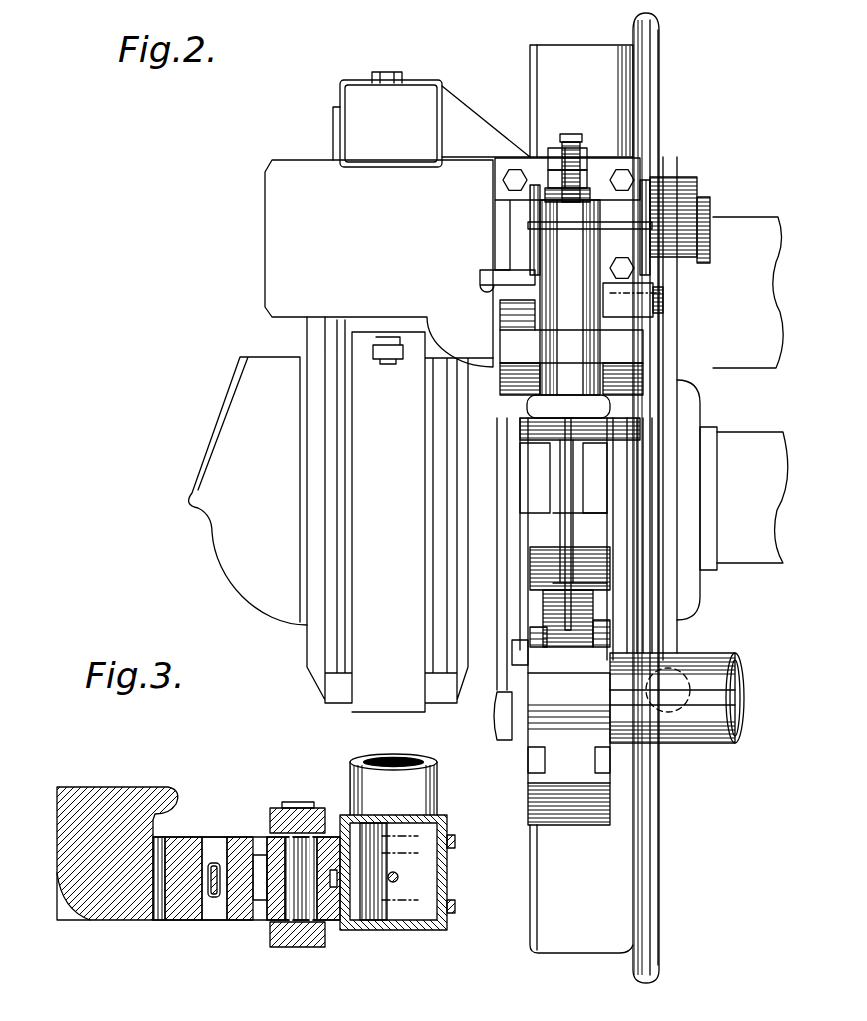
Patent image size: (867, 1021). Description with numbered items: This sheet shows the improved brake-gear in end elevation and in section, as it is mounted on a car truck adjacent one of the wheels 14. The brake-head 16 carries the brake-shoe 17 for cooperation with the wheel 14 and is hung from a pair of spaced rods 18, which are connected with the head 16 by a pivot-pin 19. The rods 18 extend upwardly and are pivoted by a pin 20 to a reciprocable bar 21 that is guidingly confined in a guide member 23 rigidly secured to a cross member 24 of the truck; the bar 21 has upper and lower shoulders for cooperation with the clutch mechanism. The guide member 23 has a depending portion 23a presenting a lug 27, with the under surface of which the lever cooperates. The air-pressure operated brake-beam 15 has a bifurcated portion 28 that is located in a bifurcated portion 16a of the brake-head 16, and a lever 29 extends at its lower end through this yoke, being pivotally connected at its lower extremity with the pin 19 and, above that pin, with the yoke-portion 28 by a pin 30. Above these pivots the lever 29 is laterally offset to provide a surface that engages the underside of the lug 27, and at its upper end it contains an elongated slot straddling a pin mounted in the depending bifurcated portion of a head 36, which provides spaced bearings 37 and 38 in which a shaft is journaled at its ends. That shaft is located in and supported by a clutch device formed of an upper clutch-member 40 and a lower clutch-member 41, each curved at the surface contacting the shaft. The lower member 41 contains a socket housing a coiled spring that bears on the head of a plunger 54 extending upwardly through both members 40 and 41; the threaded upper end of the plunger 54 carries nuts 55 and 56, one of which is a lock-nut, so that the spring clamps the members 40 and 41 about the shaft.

In FIG. 2, the wheel 14 is at (617, 914).
In FIG. 3, the wheel 14 is at (135, 792).
In FIG. 2, the brake-beam 15 is at (718, 655).
In FIG. 3, the brake-beam 15 is at (437, 806).
In FIG. 2, the brake-head 16 is at (600, 590).
In FIG. 3, the brake-head 16 is at (225, 922).
In FIG. 2, the bifurcated portion 16a is at (600, 755).
In FIG. 3, the bifurcated portion 16a is at (456, 907).
In FIG. 2, the brake-shoe 17 is at (528, 832).
In FIG. 3, the brake-shoe 17 is at (180, 922).
In FIG. 2, the rods 18 is at (518, 482).
In FIG. 3, the rods 18 is at (272, 822).
In FIG. 2, the pivot-pin 19 is at (497, 716).
In FIG. 3, the pivot-pin 19 is at (290, 805).
In FIG. 2, the pin 20 is at (527, 405).
In FIG. 2, the reciprocable bar 21 is at (520, 378).
In FIG. 2, the guide member 23 is at (623, 343).
In FIG. 2, the depending portion 23a is at (537, 462).
In FIG. 2, the cross member 24 is at (263, 268).
In FIG. 2, the lug 27 is at (553, 527).
In FIG. 2, the bifurcated portion 28 is at (545, 630).
In FIG. 3, the bifurcated portion 28 is at (268, 922).
In FIG. 2, the lever 29 is at (568, 525).
In FIG. 3, the lever 29 is at (258, 872).
In FIG. 3, the pin 30 is at (298, 838).
In FIG. 2, the head 36 is at (655, 298).
In FIG. 2, the bearing 37 is at (513, 226).
In FIG. 2, the bearing 38 is at (712, 210).
In FIG. 2, the upper clutch-member 40 is at (535, 212).
In FIG. 2, the lower clutch-member 41 is at (535, 248).
In FIG. 2, the plunger 54 is at (570, 142).
In FIG. 2, the nut 55 is at (582, 182).
In FIG. 2, the nut 56 is at (553, 158).